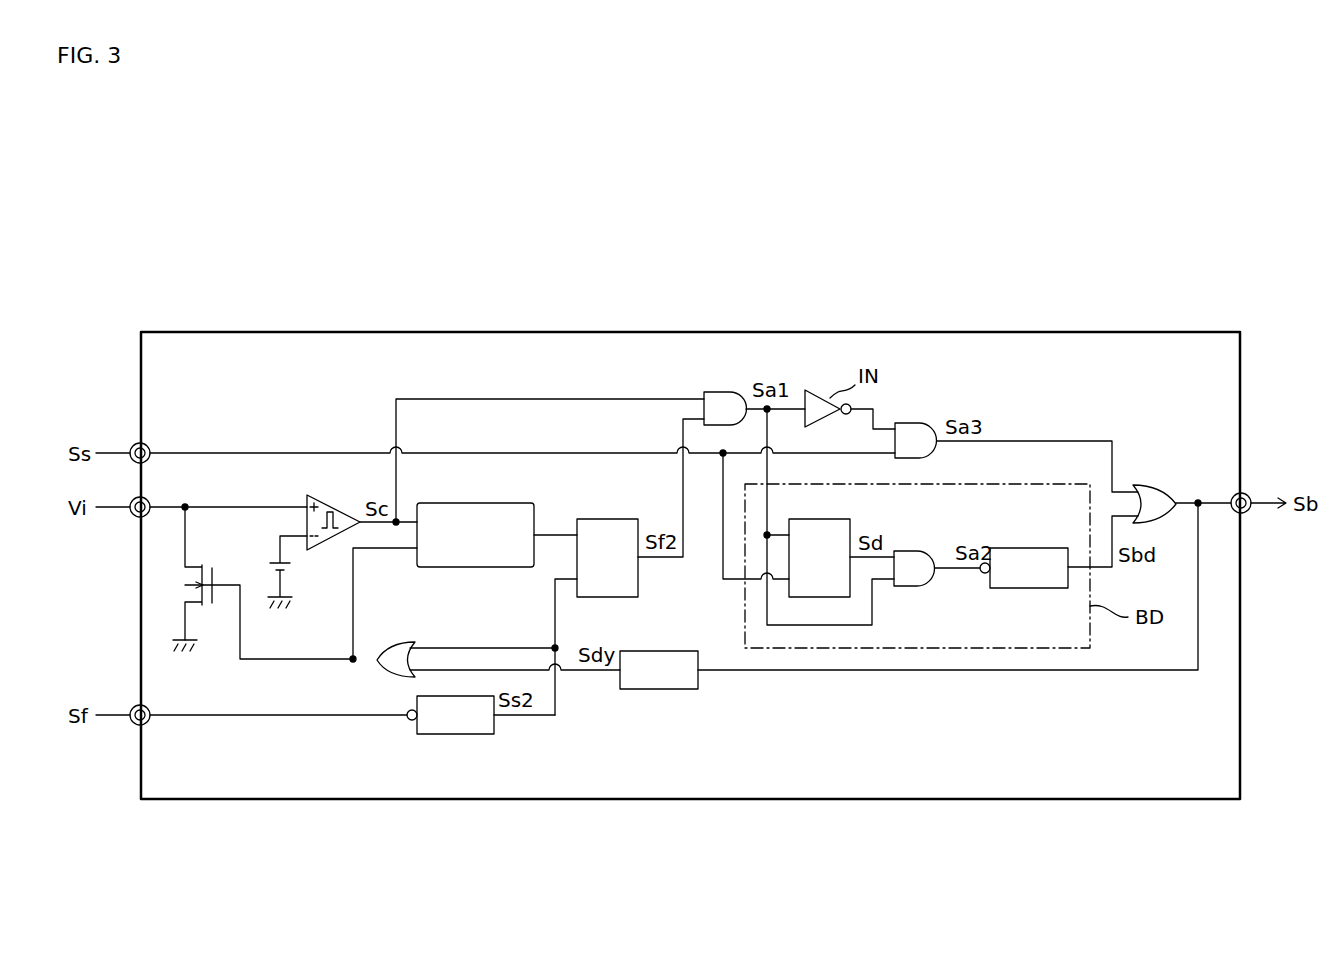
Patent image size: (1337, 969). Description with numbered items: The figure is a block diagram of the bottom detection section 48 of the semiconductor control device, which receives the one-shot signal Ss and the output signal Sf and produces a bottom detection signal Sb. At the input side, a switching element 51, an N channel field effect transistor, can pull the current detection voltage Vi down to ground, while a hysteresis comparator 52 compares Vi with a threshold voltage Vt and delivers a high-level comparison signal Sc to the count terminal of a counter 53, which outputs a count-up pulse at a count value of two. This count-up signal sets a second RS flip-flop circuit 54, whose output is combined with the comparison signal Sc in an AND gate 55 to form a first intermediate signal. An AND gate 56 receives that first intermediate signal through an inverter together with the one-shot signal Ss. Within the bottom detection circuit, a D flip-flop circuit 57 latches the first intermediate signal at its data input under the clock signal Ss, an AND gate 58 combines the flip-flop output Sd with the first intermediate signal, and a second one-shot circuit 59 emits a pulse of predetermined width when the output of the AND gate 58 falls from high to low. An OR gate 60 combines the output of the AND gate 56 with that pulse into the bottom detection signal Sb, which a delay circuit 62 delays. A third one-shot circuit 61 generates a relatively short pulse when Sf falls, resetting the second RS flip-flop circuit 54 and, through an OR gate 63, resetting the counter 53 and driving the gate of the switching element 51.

The bottom detection section 48 is at (592, 332).
The switching element 51 is at (196, 570).
The hysteresis comparator 52 is at (330, 506).
The counter 53 is at (482, 503).
The second RS flip-flop circuit 54 is at (610, 519).
The AND gate 55 is at (716, 394).
The AND gate 56 is at (912, 423).
The D flip-flop circuit 57 is at (821, 518).
The AND gate 58 is at (910, 551).
The second one-shot circuit 59 is at (1030, 548).
The OR gate 60 is at (1162, 490).
The third one-shot circuit 61 is at (455, 734).
The delay circuit 62 is at (660, 651).
The OR gate 63 is at (394, 642).